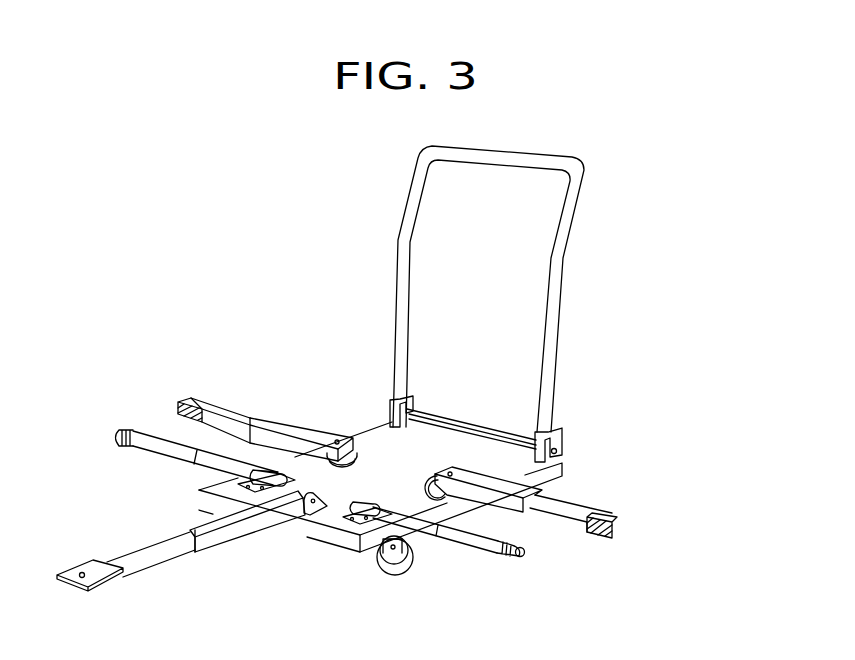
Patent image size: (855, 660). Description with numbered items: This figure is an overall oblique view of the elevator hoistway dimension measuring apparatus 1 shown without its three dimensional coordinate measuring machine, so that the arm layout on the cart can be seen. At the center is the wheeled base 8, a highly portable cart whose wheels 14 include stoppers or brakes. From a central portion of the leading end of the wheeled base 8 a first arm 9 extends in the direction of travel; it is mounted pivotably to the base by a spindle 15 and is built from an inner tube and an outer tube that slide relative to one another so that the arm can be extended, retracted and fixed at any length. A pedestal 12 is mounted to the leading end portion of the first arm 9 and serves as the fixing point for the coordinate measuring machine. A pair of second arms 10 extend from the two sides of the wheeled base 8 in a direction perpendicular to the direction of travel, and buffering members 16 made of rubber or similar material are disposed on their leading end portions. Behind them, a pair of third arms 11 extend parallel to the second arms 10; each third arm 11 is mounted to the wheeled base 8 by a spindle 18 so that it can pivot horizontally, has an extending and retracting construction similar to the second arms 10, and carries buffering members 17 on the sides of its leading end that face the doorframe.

The elevator hoistway dimension measuring apparatus 1 is at (608, 290).
The wheeled base 8 is at (380, 450).
The first arm 9 is at (150, 545).
The second arms 10 is at (475, 562).
The third arms 11 is at (577, 504).
The pedestal 12 is at (97, 574).
The wheels 14 is at (393, 578).
The spindle 15 is at (314, 505).
The buffering members 16 is at (113, 433).
The buffering members 17 is at (190, 400).
The spindle 18 is at (343, 440).